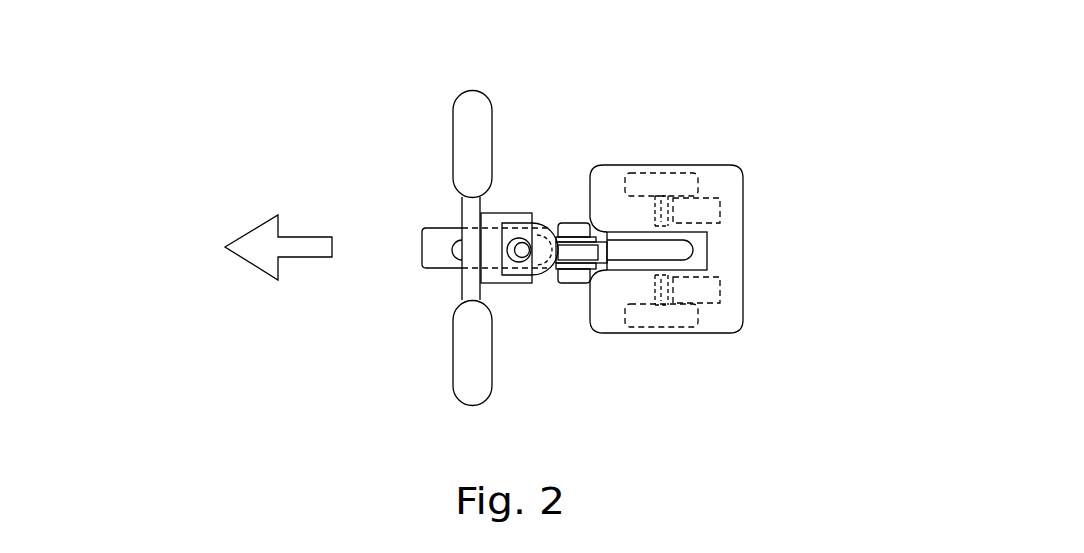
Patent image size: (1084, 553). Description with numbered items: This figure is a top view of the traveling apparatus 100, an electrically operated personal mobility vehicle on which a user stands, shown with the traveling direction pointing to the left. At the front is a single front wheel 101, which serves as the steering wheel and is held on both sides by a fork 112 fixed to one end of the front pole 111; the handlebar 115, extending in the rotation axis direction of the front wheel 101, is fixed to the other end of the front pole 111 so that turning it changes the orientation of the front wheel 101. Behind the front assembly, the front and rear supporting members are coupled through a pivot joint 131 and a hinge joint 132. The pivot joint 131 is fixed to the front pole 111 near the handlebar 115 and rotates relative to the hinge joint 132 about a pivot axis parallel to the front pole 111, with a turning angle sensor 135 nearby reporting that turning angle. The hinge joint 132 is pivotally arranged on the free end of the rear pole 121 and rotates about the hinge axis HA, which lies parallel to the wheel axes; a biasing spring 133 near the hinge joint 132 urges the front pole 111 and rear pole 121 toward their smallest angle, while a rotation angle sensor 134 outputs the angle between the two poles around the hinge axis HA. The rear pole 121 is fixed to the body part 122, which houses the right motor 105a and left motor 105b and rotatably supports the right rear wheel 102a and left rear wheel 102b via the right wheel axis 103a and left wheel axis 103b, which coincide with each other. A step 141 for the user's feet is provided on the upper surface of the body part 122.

The traveling apparatus 100 is at (414, 58).
The front wheel 101 is at (428, 237).
The handlebar 115 is at (462, 200).
The fork 112 is at (497, 213).
The pivot joint 131 is at (536, 222).
The turning angle sensor 135 is at (548, 270).
The front pole 111 is at (519, 257).
The biasing spring 133 is at (562, 222).
The hinge axis HA is at (586, 222).
The hinge joint 132 is at (560, 270).
The rotation angle sensor 134 is at (575, 283).
The rear pole 121 is at (630, 165).
The step 141 is at (615, 333).
The body part 122 is at (707, 243).
The right rear wheel 102a is at (648, 176).
The right wheel axis 103a is at (663, 200).
The right motor 105a is at (720, 205).
The left rear wheel 102b is at (653, 328).
The left wheel axis 103b is at (665, 303).
The left motor 105b is at (720, 283).